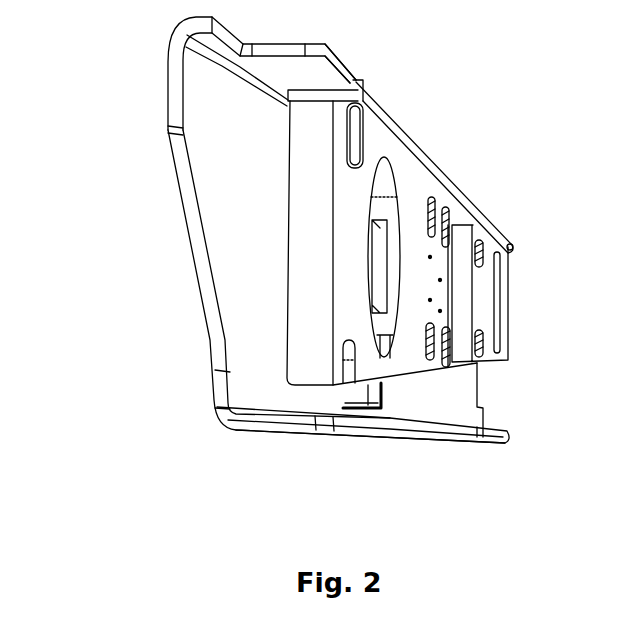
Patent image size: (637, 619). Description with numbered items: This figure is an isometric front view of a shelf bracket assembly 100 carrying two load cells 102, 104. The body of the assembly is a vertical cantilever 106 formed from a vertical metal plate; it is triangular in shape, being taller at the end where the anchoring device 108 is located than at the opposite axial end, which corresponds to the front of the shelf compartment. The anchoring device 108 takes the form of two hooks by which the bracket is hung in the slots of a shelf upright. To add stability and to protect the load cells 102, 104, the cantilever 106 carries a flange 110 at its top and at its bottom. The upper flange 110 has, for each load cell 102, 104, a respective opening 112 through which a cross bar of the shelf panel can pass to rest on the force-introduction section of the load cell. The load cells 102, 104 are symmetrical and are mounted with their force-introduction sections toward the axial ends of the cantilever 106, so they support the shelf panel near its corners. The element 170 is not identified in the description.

The shelf bracket assembly 100 is at (136, 58).
The load cell 102 is at (521, 307).
The load cell 104 is at (417, 390).
The vertical cantilever 106 is at (228, 267).
The anchoring device 108 is at (508, 399).
The flange 110 is at (430, 155).
The opening 112 is at (370, 66).
The bottom flange 170 is at (397, 428).